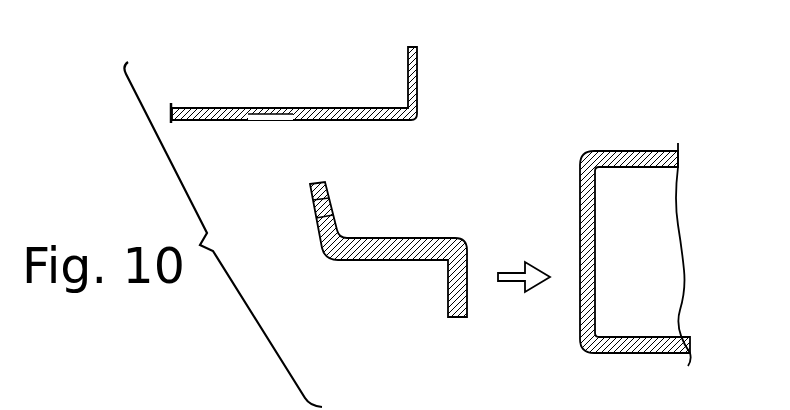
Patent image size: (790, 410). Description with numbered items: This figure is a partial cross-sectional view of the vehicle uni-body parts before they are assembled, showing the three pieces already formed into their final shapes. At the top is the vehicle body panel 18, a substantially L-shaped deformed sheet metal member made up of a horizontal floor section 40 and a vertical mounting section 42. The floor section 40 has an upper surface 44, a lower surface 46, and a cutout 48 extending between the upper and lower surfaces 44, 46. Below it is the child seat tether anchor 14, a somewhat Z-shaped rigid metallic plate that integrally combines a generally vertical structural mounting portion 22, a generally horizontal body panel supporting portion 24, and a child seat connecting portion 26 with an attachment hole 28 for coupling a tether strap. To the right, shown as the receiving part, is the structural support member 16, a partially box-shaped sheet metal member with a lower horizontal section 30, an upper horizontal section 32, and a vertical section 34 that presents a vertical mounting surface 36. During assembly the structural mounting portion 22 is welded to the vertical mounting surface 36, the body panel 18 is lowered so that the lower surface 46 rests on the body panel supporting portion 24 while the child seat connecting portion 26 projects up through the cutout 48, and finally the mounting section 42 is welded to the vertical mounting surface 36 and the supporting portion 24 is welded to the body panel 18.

The child seat tether anchor 14 is at (437, 186).
The structural support member 16 is at (680, 130).
The vehicle body panel 18 is at (432, 52).
The structural mounting portion 22 is at (448, 292).
The body panel supporting portion 24 is at (397, 262).
The child seat connecting portion 26 is at (308, 195).
The attachment hole 28 is at (312, 210).
The lower horizontal section 30 is at (640, 352).
The upper horizontal section 32 is at (640, 168).
The vertical section 34 is at (591, 264).
The vertical mounting surface 36 is at (580, 228).
The horizontal floor section 40 is at (195, 108).
The vertical mounting section 42 is at (418, 70).
The upper surface 44 is at (331, 108).
The lower surface 46 is at (343, 120).
The cutout 48 is at (282, 112).